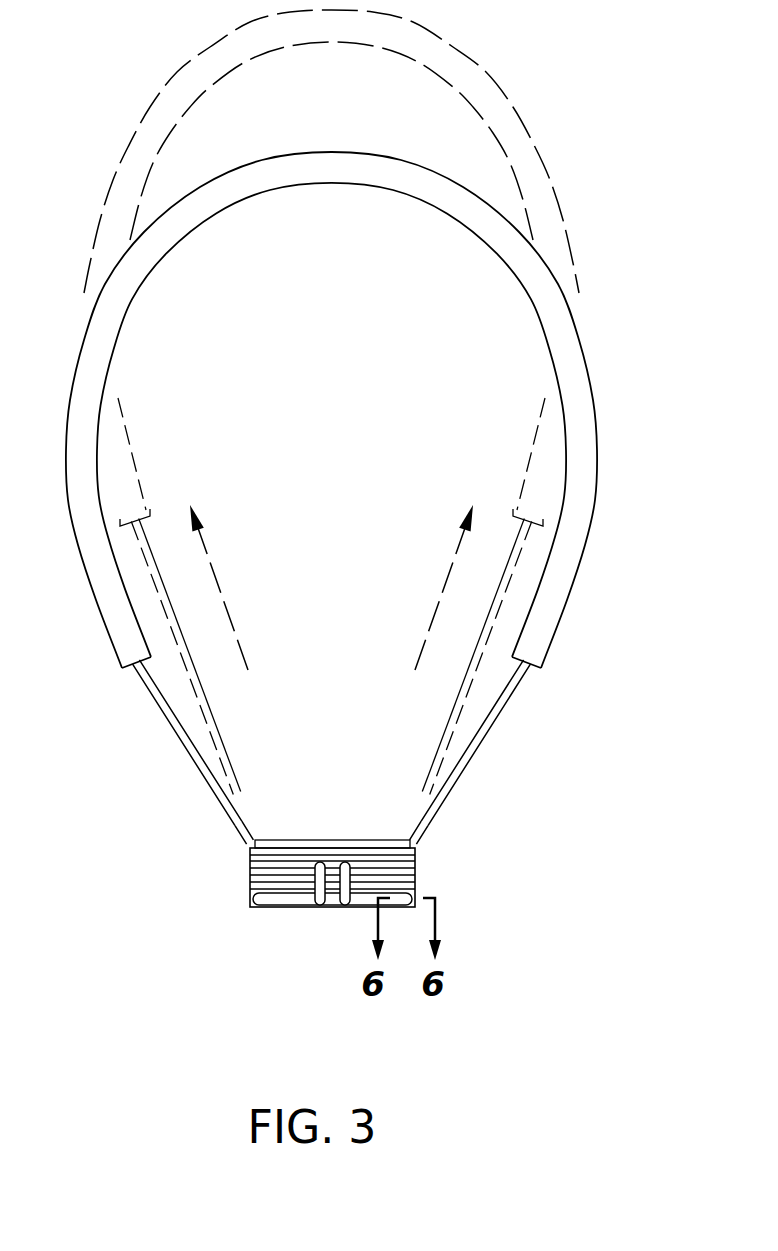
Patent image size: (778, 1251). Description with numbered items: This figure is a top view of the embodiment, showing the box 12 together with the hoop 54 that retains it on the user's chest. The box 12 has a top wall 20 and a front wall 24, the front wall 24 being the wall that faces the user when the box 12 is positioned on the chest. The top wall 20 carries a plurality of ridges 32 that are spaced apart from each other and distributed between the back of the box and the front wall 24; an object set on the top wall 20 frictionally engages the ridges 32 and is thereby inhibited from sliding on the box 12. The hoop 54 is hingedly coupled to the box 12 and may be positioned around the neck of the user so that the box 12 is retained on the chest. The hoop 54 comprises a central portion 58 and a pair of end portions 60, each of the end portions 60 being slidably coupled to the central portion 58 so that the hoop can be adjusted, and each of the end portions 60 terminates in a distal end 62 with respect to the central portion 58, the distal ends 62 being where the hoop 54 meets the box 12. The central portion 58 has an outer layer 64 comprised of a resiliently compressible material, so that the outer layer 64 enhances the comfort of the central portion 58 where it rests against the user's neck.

The box 12 is at (252, 898).
The top wall 20 is at (403, 876).
The front wall 24 is at (331, 840).
The ridges 32 is at (252, 890).
The hoop 54 is at (232, 140).
The central portion 58 is at (363, 152).
The end portions 60 is at (158, 704).
The distal end 62 is at (408, 845).
The outer layer 64 is at (574, 378).